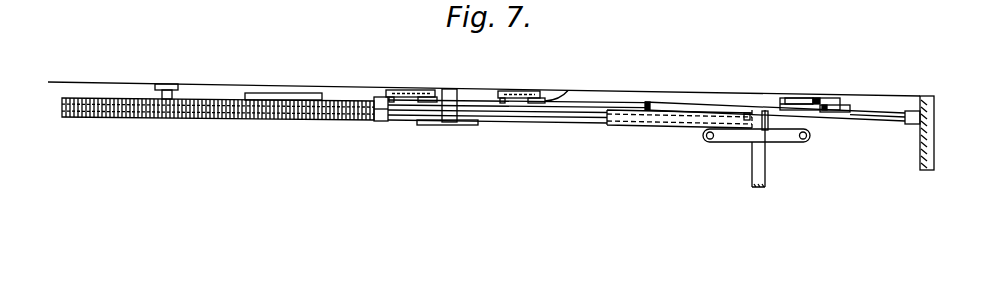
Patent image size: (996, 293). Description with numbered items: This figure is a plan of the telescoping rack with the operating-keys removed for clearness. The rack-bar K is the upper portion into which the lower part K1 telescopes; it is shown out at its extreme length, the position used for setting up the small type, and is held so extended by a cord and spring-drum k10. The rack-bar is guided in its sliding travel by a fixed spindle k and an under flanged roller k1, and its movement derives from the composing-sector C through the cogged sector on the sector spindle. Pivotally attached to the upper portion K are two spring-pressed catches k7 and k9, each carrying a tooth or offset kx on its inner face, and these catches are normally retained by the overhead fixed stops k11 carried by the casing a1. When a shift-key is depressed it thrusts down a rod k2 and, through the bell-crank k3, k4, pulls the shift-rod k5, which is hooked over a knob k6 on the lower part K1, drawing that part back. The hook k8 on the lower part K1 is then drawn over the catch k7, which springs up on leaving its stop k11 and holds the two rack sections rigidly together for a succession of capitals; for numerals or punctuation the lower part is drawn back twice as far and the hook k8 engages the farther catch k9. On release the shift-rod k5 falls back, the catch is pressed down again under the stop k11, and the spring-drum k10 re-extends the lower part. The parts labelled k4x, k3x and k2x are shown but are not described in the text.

The lower part of rack-bar K1 is at (127, 118).
The cord and spring-drum k10 is at (177, 91).
The hook k8 is at (280, 97).
The knob k6 is at (382, 122).
The shift-rod k5 is at (582, 108).
The tooth or offset kx is at (568, 97).
The under flanged roller k1 is at (463, 116).
The catch k7 is at (397, 90).
The fixed stop k11 is at (411, 92).
The catch k9 is at (502, 94).
The rack-bar K is at (625, 121).
The bell-crank k4 is at (712, 107).
The fixed spindle k is at (893, 120).
The composing-sector C is at (753, 163).
The bell-crank k3 is at (803, 99).
The plate k4x is at (788, 98).
The rod k2 is at (817, 103).
The plate k3x is at (838, 108).
The stop k2x is at (825, 109).
The casing a1 is at (934, 146).